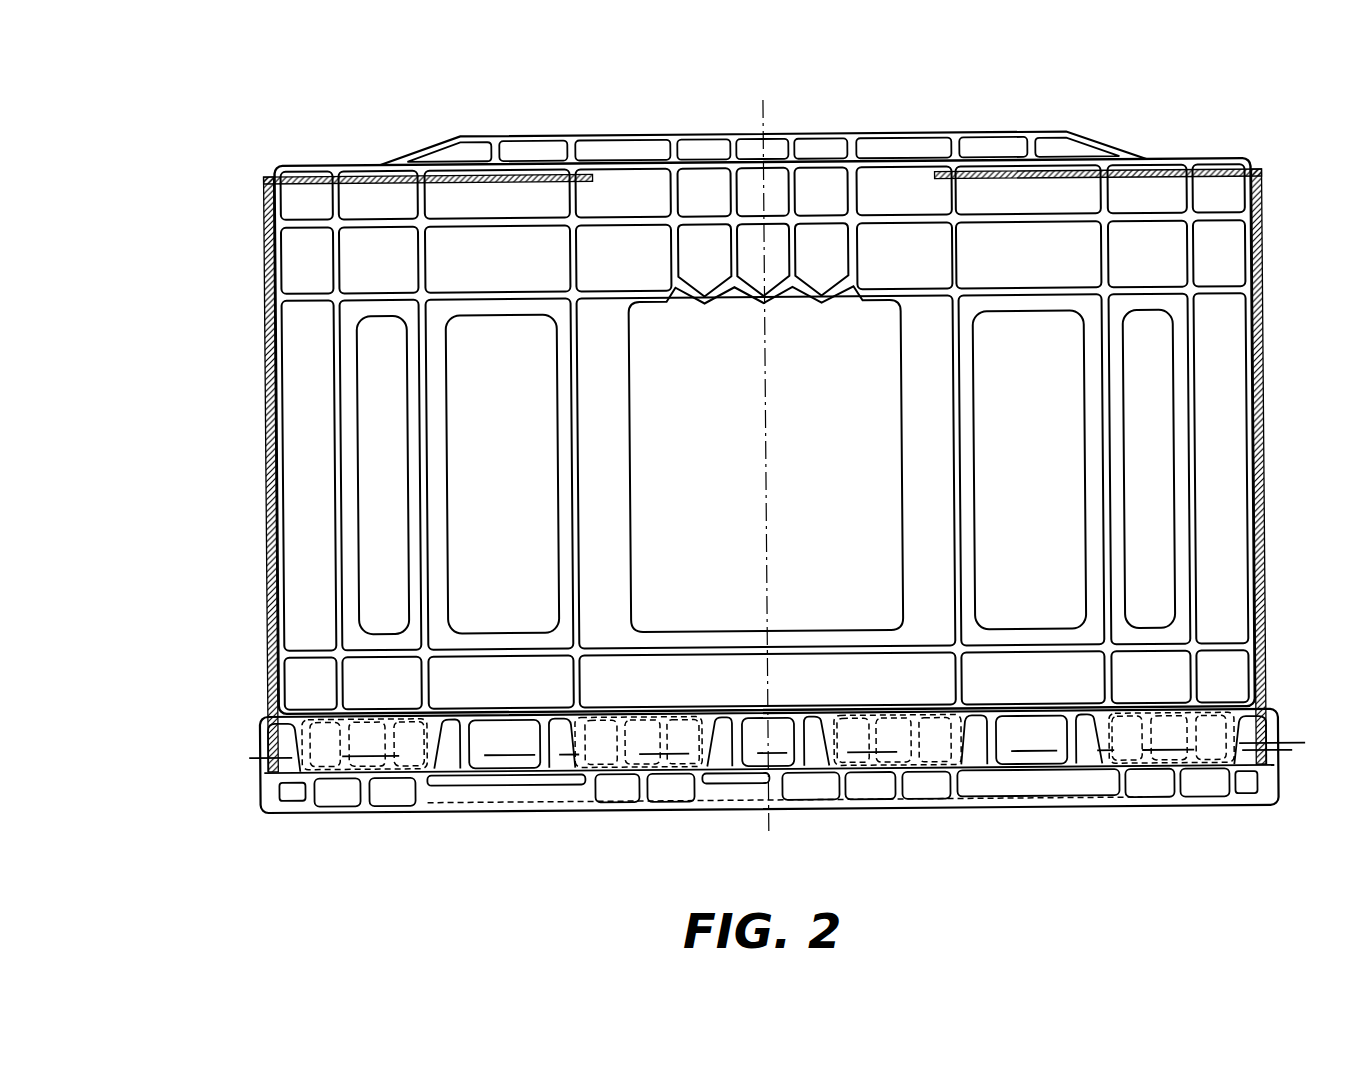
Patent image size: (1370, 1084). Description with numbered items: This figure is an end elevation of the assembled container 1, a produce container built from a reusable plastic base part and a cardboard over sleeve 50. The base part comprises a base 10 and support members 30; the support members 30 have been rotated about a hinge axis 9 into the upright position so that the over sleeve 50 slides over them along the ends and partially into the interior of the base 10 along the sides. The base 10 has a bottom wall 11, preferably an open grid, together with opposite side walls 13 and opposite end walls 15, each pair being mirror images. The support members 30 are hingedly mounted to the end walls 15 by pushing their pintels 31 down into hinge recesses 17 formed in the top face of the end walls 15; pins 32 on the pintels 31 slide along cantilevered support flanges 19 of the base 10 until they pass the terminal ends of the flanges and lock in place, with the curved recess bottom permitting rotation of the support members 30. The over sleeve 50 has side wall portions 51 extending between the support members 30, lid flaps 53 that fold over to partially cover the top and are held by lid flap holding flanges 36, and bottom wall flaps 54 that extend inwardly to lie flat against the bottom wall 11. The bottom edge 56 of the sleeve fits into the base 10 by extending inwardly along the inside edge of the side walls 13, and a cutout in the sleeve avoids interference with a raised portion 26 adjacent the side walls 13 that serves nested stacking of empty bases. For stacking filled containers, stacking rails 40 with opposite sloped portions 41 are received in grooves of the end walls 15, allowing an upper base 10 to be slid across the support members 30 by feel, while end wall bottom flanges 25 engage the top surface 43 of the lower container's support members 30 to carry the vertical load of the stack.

The container 1 is at (934, 818).
The hinge axis 9 is at (1303, 747).
The base 10 is at (1085, 790).
The bottom wall 11 is at (816, 805).
The side walls 13 is at (250, 754).
The end walls 15 is at (568, 805).
The hinge recesses 17 is at (440, 722).
The cantilevered support flanges 19 is at (290, 736).
The end wall bottom flanges 25 is at (428, 805).
The raised portion 26 is at (297, 790).
The support members 30 is at (762, 401).
The pintels 31 is at (376, 752).
The pins 32 is at (440, 755).
The lid flap holding flanges 36 is at (480, 176).
The stacking rails 40 is at (763, 127).
The sloped portions 41 is at (470, 148).
The top surface 43 is at (300, 165).
The over sleeve 50 is at (730, 430).
The side wall portions 51 is at (267, 468).
The lid flaps 53 is at (372, 178).
The bottom wall flaps 54 is at (350, 806).
The bottom edge 56 is at (265, 722).